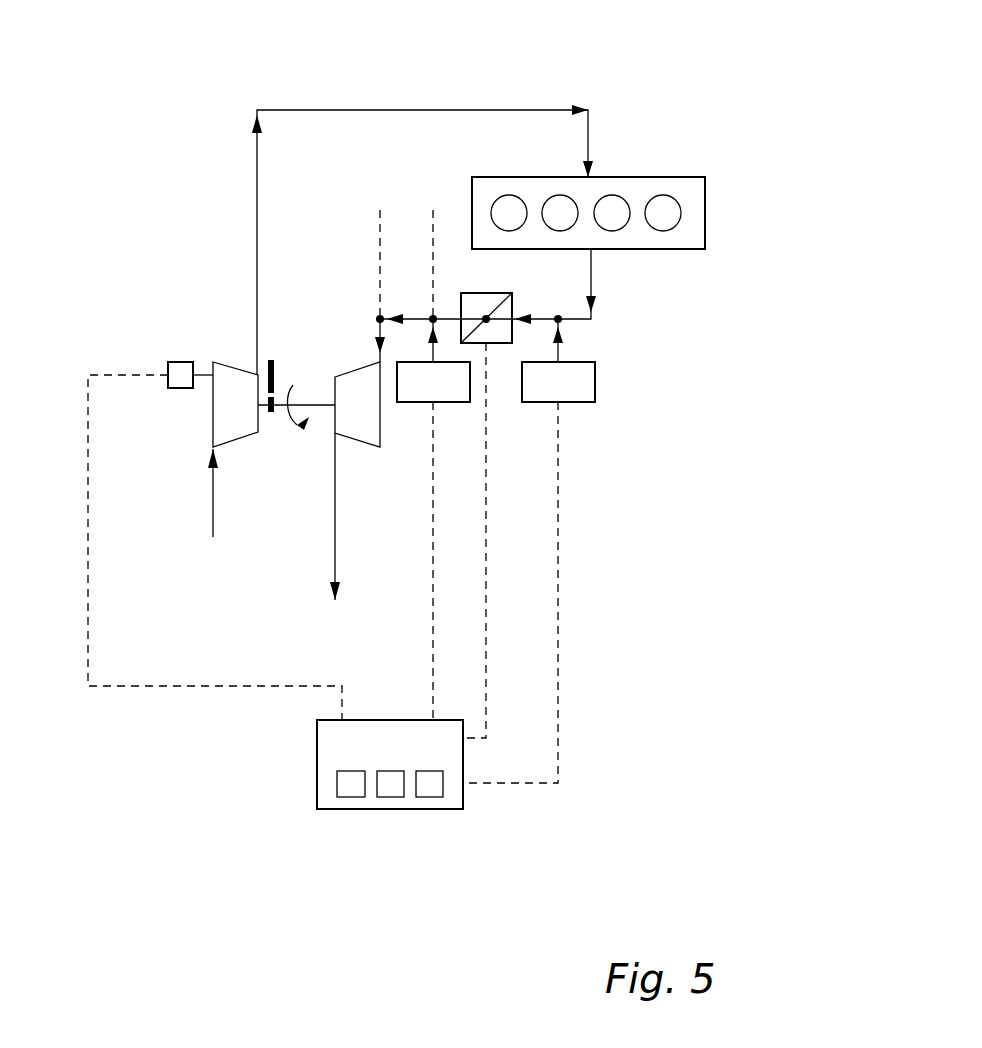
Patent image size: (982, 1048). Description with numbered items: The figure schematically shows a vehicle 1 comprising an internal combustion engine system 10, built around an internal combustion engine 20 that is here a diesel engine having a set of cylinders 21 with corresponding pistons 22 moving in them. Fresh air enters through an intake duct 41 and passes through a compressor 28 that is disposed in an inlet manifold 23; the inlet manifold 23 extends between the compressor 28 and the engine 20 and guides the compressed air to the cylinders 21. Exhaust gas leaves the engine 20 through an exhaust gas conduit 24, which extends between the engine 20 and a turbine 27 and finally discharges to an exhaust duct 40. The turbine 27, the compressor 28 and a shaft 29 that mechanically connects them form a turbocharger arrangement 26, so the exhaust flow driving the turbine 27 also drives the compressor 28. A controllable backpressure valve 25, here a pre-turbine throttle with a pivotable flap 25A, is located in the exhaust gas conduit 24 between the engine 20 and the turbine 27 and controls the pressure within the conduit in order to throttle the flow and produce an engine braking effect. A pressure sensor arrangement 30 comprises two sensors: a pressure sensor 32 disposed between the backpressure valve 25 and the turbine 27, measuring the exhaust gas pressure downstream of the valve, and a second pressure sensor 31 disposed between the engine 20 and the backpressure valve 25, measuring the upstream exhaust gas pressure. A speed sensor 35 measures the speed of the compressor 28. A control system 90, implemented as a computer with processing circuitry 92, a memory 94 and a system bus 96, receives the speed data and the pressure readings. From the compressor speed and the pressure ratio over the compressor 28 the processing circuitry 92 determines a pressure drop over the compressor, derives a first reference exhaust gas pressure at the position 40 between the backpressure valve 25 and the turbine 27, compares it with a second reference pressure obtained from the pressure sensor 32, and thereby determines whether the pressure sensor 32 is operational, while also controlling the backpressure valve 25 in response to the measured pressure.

The vehicle 1 is at (437, 458).
The internal combustion engine system 10 is at (252, 102).
The internal combustion engine 20 is at (629, 180).
The cylinder 21 is at (600, 162).
The piston 22 is at (662, 176).
The inlet manifold 23 is at (515, 108).
The exhaust gas conduit 24 is at (425, 318).
The controllable backpressure valve 25 is at (482, 398).
The pivotable flap 25A is at (484, 317).
The turbocharger arrangement 26 is at (269, 466).
The turbine 27 is at (380, 447).
The compressor 28 is at (208, 410).
The shaft 29 is at (322, 410).
The pressure sensor arrangement 30 is at (536, 477).
The second pressure sensor 31 is at (578, 402).
The pressure sensor 32 is at (445, 402).
The speed sensor 35 is at (181, 361).
The exhaust duct 40 is at (377, 317).
The intake duct 41 is at (228, 577).
The control system 90 is at (351, 812).
The processing circuitry 92 is at (348, 798).
The memory 94 is at (387, 798).
The system bus 96 is at (428, 798).